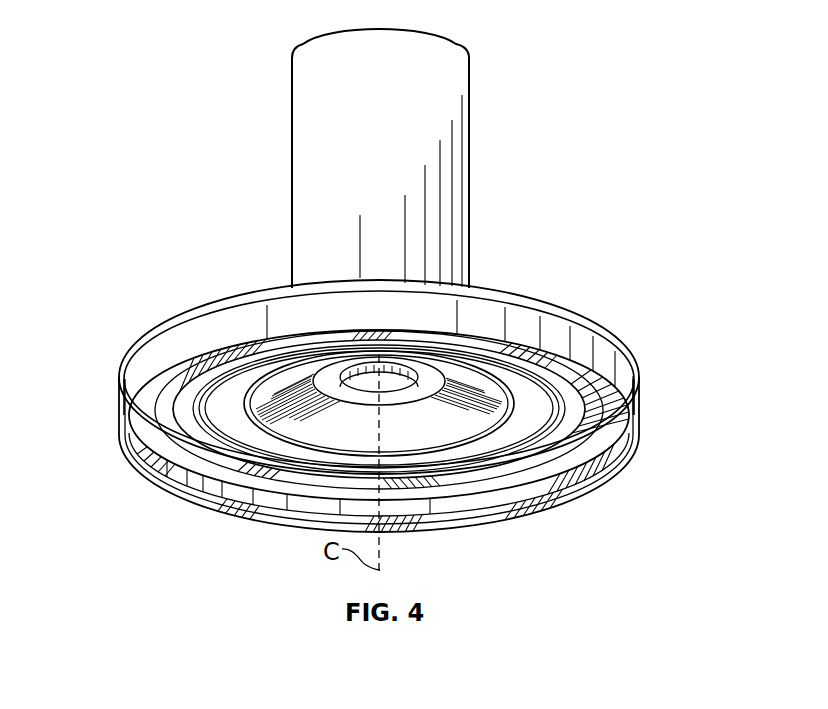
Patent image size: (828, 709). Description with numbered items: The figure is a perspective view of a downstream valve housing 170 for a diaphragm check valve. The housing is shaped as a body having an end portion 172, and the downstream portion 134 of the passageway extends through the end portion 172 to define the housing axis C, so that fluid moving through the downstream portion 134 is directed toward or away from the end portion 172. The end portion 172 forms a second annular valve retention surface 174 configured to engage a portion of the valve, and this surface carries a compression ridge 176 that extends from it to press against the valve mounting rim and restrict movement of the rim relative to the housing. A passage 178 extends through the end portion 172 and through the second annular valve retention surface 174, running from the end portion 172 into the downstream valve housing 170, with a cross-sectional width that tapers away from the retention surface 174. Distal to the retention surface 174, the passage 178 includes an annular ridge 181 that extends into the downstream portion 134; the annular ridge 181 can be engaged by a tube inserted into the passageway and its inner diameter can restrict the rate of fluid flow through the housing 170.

The downstream valve housing 170 is at (141, 23).
The downstream portion of the passageway 134 is at (330, 27).
The end portion 172 is at (657, 531).
The second annular valve retention surface 174 is at (250, 437).
The compression ridge 176 is at (528, 442).
The passage 178 is at (447, 440).
The annular ridge 181 is at (422, 387).